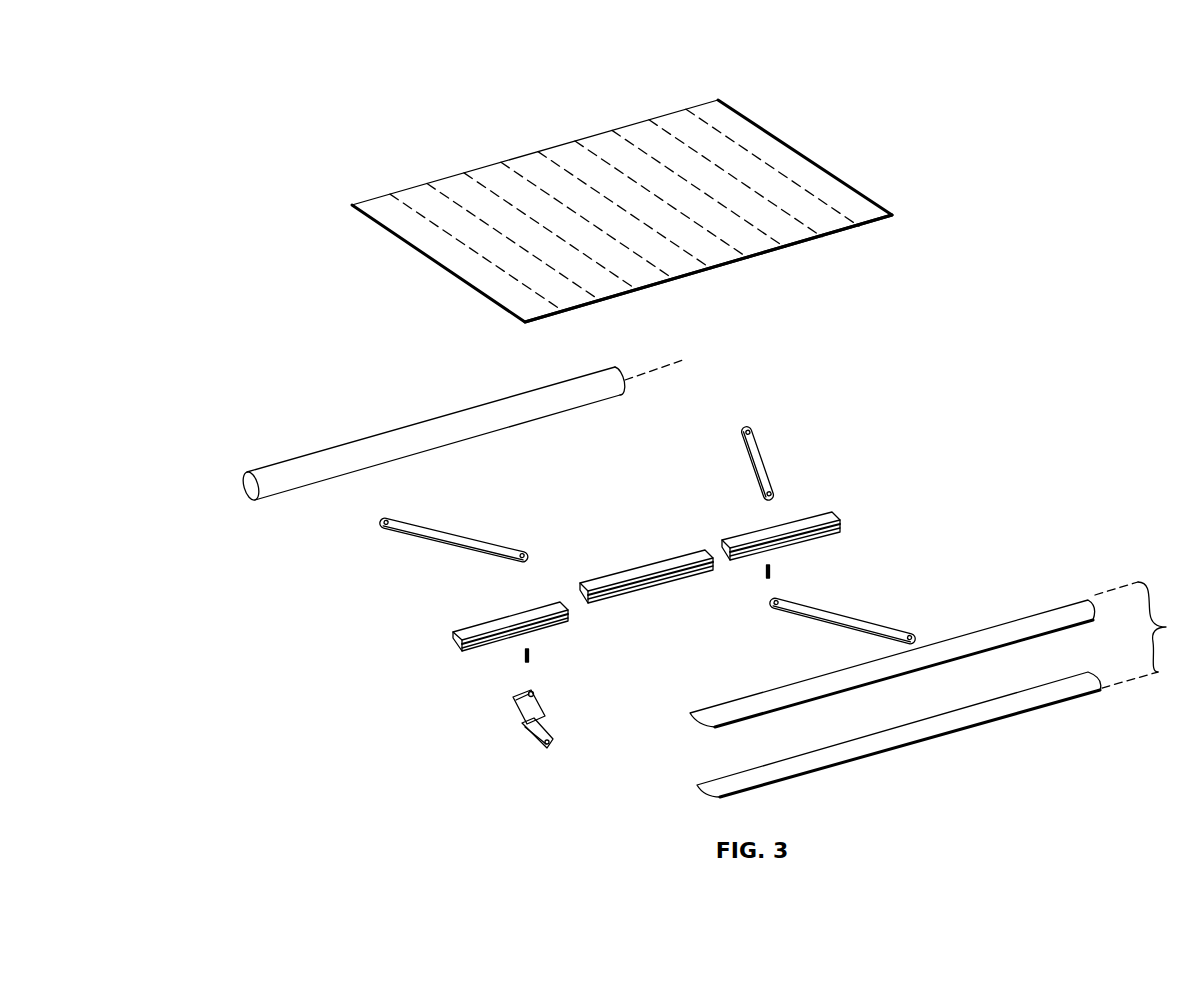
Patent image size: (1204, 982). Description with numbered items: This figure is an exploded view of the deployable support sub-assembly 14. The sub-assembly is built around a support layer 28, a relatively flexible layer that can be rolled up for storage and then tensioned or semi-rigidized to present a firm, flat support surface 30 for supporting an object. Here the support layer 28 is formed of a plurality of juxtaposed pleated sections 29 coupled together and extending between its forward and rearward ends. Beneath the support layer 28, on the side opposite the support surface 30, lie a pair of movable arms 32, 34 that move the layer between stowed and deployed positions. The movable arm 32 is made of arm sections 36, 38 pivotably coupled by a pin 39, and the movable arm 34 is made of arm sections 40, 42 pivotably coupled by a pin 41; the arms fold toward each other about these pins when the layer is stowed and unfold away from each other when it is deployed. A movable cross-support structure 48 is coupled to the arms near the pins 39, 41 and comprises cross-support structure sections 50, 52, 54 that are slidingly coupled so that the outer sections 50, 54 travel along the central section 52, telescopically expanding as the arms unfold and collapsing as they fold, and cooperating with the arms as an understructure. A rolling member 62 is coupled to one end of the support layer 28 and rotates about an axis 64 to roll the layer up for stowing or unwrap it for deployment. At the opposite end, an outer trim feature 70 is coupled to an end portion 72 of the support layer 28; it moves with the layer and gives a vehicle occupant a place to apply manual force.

The deployable support sub-assembly 14 is at (1022, 144).
The support layer 28 is at (632, 173).
The juxtaposed pleated sections 29 is at (488, 192).
The support surface 30 is at (710, 147).
The movable arm 32 is at (466, 614).
The movable arm 34 is at (838, 511).
The arm section 36 is at (452, 543).
The arm section 38 is at (520, 700).
The pin 39 is at (534, 655).
The arm section 40 is at (757, 435).
The pin 41 is at (779, 568).
The arm section 42 is at (845, 607).
The movable cross-support structure 48 is at (651, 562).
The cross-support structure section 50 is at (490, 624).
The cross-support structure section 52 is at (635, 578).
The cross-support structure section 54 is at (820, 512).
The rolling member 62 is at (433, 414).
The axis 64 is at (650, 372).
The outer trim feature 70 is at (941, 689).
The end portion 72 is at (851, 222).